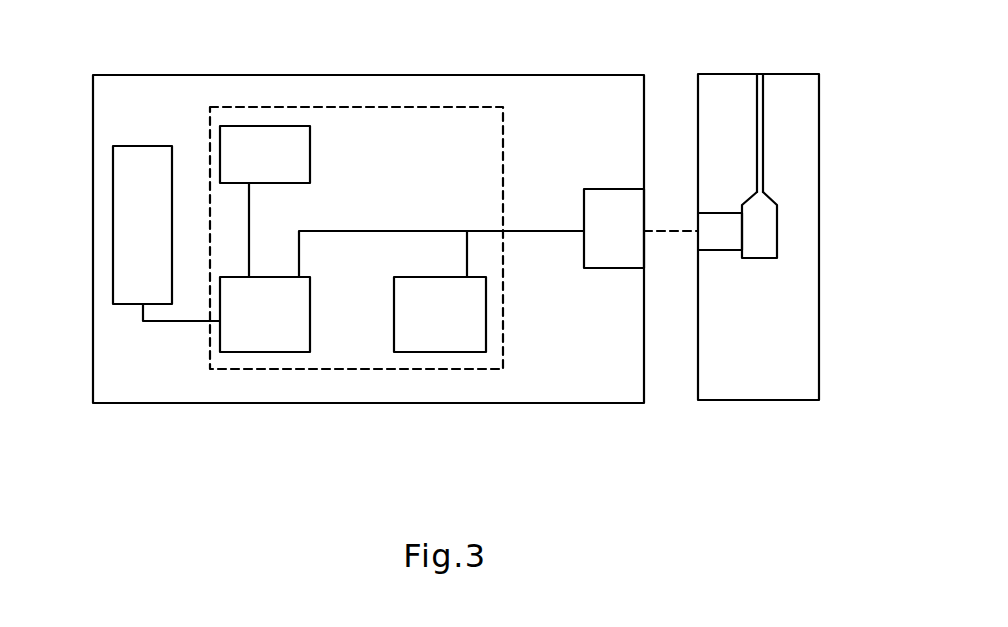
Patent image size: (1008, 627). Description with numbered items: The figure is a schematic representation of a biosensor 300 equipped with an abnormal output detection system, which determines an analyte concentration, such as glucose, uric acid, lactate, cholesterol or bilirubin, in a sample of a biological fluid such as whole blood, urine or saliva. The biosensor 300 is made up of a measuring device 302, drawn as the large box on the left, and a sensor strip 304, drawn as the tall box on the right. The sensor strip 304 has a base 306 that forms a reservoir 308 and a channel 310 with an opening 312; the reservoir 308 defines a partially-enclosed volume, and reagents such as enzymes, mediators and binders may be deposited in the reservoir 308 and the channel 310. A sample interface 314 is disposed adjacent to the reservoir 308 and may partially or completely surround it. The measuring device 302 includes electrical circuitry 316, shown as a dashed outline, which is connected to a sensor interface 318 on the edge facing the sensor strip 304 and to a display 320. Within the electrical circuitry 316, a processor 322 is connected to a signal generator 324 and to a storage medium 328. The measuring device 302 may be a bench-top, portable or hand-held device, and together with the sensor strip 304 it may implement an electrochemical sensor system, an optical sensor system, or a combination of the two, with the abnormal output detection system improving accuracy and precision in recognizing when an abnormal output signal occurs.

The biosensor 300 is at (60, 21).
The measuring device 302 is at (572, 403).
The sensor strip 304 is at (753, 400).
The base 306 is at (760, 345).
The reservoir 308 is at (760, 230).
The channel 310 is at (760, 125).
The opening 312 is at (758, 78).
The sample interface 314 is at (715, 228).
The electrical circuitry 316 is at (358, 370).
The sensor interface 318 is at (606, 212).
The display 320 is at (142, 252).
The processor 322 is at (266, 333).
The signal generator 324 is at (443, 323).
The storage medium 328 is at (263, 148).